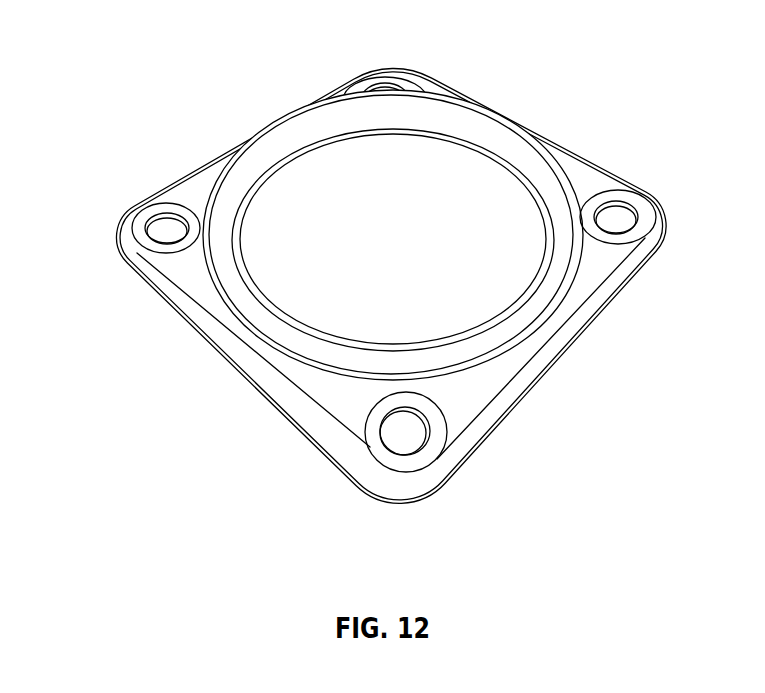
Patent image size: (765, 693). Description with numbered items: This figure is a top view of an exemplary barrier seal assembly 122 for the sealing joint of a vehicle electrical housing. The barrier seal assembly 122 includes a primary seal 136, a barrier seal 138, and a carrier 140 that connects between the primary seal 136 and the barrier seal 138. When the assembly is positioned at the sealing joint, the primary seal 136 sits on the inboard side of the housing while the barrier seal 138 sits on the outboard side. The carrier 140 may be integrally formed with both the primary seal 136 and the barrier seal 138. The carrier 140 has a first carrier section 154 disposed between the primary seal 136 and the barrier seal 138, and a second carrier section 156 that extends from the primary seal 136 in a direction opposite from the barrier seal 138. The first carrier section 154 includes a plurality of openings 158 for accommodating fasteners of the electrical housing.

The barrier seal assembly 122 is at (113, 57).
The primary seal 136 is at (452, 117).
The barrier seal 138 is at (258, 368).
The carrier 140 is at (336, 396).
The first carrier section 154 is at (200, 292).
The second carrier section 156 is at (243, 275).
The openings 158 is at (383, 84).